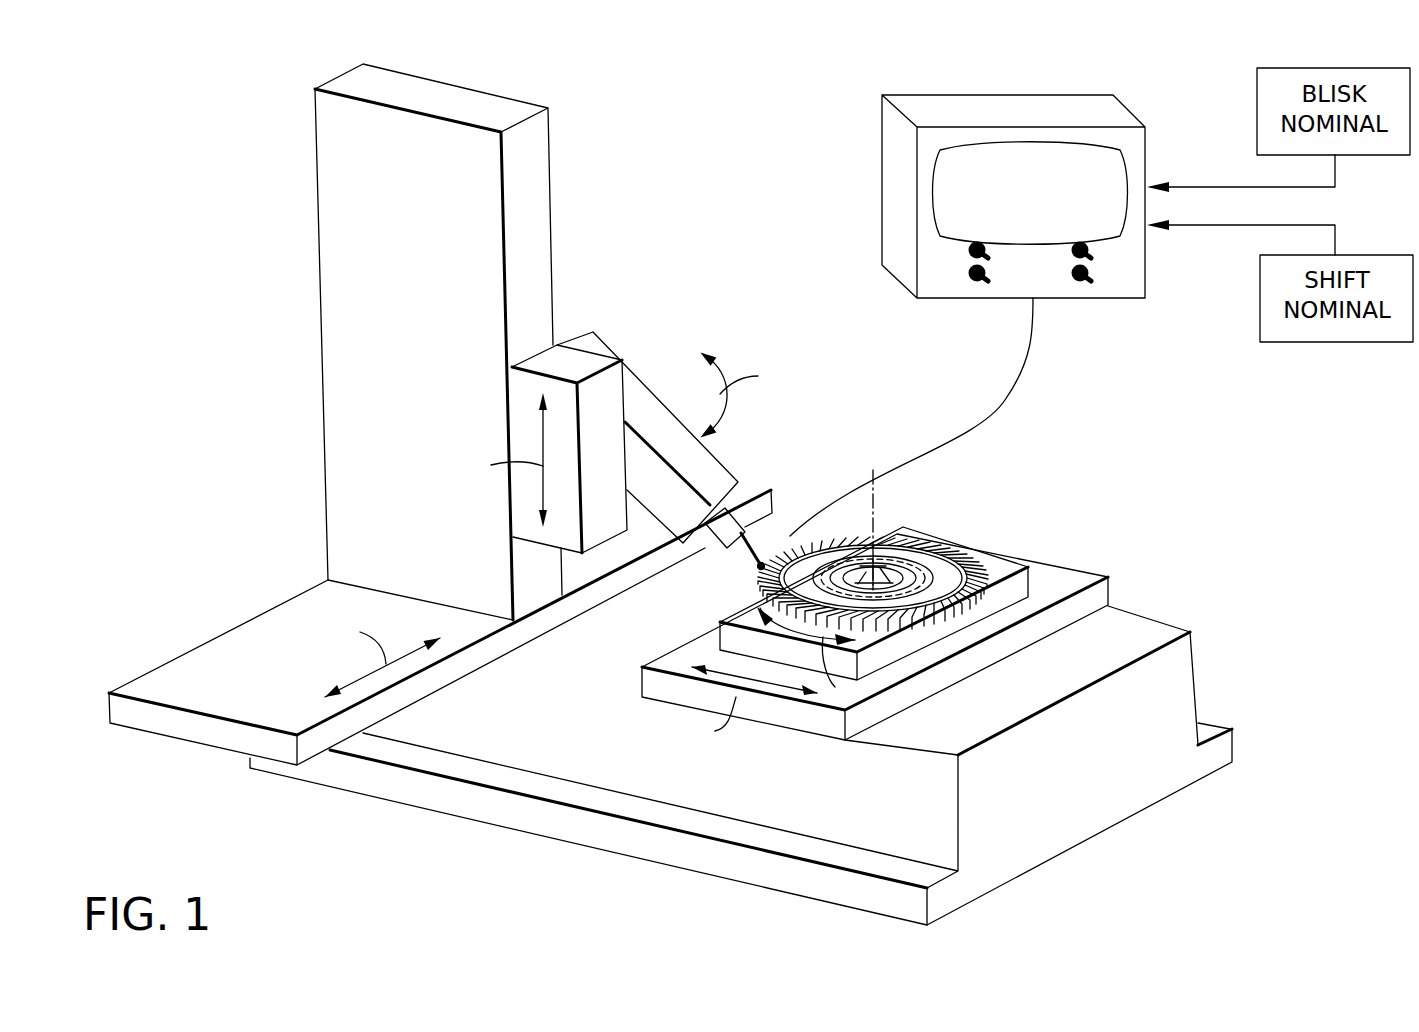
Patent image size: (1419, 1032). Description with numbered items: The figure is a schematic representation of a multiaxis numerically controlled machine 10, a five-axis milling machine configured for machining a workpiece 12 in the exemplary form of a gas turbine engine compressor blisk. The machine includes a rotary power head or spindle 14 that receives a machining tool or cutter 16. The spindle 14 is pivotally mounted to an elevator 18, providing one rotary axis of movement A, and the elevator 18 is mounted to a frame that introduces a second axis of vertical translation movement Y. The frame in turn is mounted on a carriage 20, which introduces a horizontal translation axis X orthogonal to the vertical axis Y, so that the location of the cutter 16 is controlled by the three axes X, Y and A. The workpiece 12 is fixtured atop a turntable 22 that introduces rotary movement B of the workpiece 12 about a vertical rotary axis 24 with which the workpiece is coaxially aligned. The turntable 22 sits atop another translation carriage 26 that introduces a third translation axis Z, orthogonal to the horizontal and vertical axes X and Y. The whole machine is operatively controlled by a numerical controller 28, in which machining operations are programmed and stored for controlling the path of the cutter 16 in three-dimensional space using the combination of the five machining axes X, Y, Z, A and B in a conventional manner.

The multiaxis numerically controlled machine 10 is at (1188, 494).
The workpiece 12 is at (942, 538).
The spindle 14 is at (718, 540).
The cutter 16 is at (758, 569).
The elevator 18 is at (560, 342).
The carriage 20 is at (224, 689).
The turntable 22 is at (1007, 567).
The vertical rotary axis 24 is at (878, 490).
The translation carriage 26 is at (1087, 578).
The numerical controller 28 is at (905, 178).